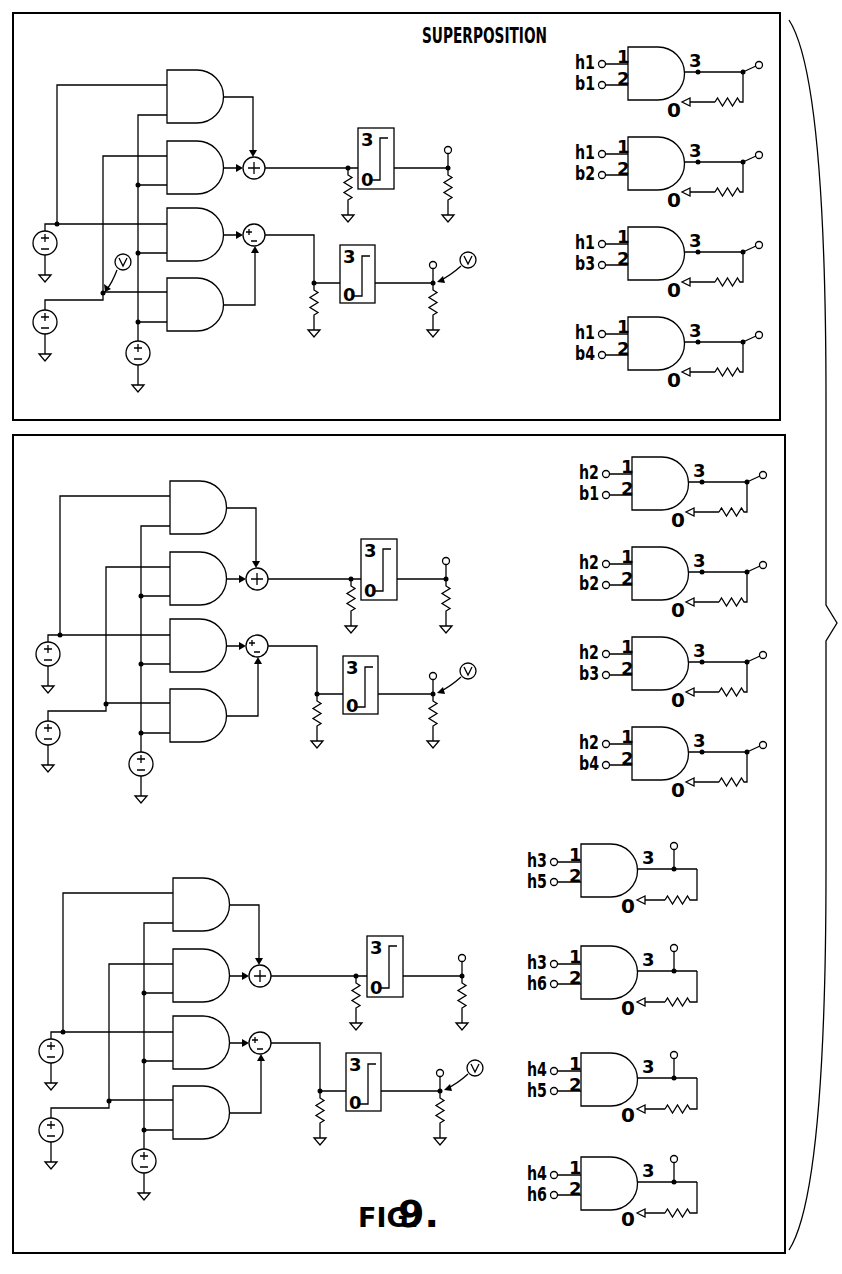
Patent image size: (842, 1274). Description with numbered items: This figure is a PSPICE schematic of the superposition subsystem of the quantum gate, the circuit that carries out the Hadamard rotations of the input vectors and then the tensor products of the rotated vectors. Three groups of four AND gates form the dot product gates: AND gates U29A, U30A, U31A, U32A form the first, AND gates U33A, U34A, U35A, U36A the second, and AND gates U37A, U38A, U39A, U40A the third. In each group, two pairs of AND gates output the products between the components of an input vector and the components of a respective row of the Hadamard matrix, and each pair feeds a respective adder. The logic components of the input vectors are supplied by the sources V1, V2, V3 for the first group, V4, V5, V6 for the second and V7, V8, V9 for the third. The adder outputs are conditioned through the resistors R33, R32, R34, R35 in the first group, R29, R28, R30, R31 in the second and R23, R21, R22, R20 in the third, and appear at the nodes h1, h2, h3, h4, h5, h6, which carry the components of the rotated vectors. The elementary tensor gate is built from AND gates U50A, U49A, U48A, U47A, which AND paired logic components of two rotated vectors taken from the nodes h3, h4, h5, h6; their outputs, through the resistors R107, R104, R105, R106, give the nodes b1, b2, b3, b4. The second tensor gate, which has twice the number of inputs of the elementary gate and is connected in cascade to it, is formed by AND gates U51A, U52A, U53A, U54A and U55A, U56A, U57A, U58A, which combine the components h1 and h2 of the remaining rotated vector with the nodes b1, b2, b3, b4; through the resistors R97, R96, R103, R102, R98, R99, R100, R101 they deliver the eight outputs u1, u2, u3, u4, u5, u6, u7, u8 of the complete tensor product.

The AND gate 7408 U29A is at (196, 93).
The AND gate 7408 U30A is at (196, 164).
The AND gate 7408 U31A is at (196, 231).
The AND gate 7408 U32A is at (196, 301).
The AND gate 7408 U33A is at (199, 504).
The AND gate 7408 U34A is at (199, 575).
The AND gate 7408 U35A is at (199, 642).
The AND gate 7408 U36A is at (199, 712).
The AND gate 7408 U37A is at (202, 901).
The AND gate 7408 U38A is at (202, 972).
The AND gate 7408 U39A is at (202, 1039).
The AND gate 7408 U40A is at (202, 1109).
The AND gate 7408 U47A is at (609, 1183).
The AND gate 7408 U48A is at (609, 1079).
The AND gate 7408 U49A is at (609, 972).
The AND gate 7408 U50A is at (609, 870).
The AND gate 7408 U51A is at (656, 73).
The AND gate 7408 U52A is at (656, 163).
The AND gate 7408 U53A is at (656, 253).
The AND gate 7408 U54A is at (656, 343).
The AND gate 7408 U55A is at (660, 483).
The AND gate 7408 U56A is at (660, 573).
The AND gate 7408 U57A is at (660, 663).
The AND gate 7408 U58A is at (660, 753).
The 100k resistor R20 is at (437, 1128).
The 100k resistor R21 is at (458, 1013).
The 100k resistor R22 is at (314, 1128).
The 100k resistor R23 is at (350, 1013).
The 100k resistor R28 is at (442, 616).
The 100k resistor R29 is at (345, 616).
The 100k resistor R30 is at (311, 731).
The 100k resistor R31 is at (430, 731).
The 100k resistor R32 is at (444, 205).
The 100k resistor R33 is at (342, 205).
The 100k resistor R34 is at (308, 320).
The 100k resistor R35 is at (430, 320).
The 100k resistor R96 is at (712, 190).
The 100k resistor R97 is at (712, 100).
The 100k resistor R98 is at (716, 510).
The 100k resistor R99 is at (716, 600).
The 100k resistor R100 is at (716, 690).
The 100k resistor R101 is at (716, 780).
The 100k resistor R102 is at (712, 370).
The 100k resistor R103 is at (712, 280).
The 100k resistor R104 is at (667, 999).
The 100k resistor R105 is at (667, 1106).
The 100k resistor R106 is at (667, 1210).
The 100k resistor R107 is at (667, 897).
The voltage source V1 is at (55, 263).
The voltage source V2 is at (55, 342).
The voltage source V3 is at (144, 364).
The voltage source V4 is at (58, 674).
The voltage source V5 is at (58, 753).
The voltage source V6 is at (147, 775).
The voltage source V7 is at (61, 1071).
The voltage source V8 is at (61, 1150).
The voltage source V9 is at (150, 1172).
The hysteresis output node h1 is at (447, 146).
The hysteresis output node h2 is at (433, 261).
The hysteresis output node h3 is at (445, 557).
The hysteresis output node h4 is at (433, 672).
The hysteresis output node h5 is at (461, 954).
The hysteresis output node h6 is at (440, 1069).
The intermediate output node b1 is at (675, 844).
The intermediate output node b2 is at (675, 946).
The intermediate output node b3 is at (675, 1053).
The intermediate output node b4 is at (675, 1157).
The output node u1 is at (755, 54).
The output node u2 is at (755, 144).
The output node u3 is at (755, 234).
The output node u4 is at (755, 324).
The output node u5 is at (759, 464).
The output node u6 is at (759, 554).
The output node u7 is at (759, 644).
The output node u8 is at (759, 734).